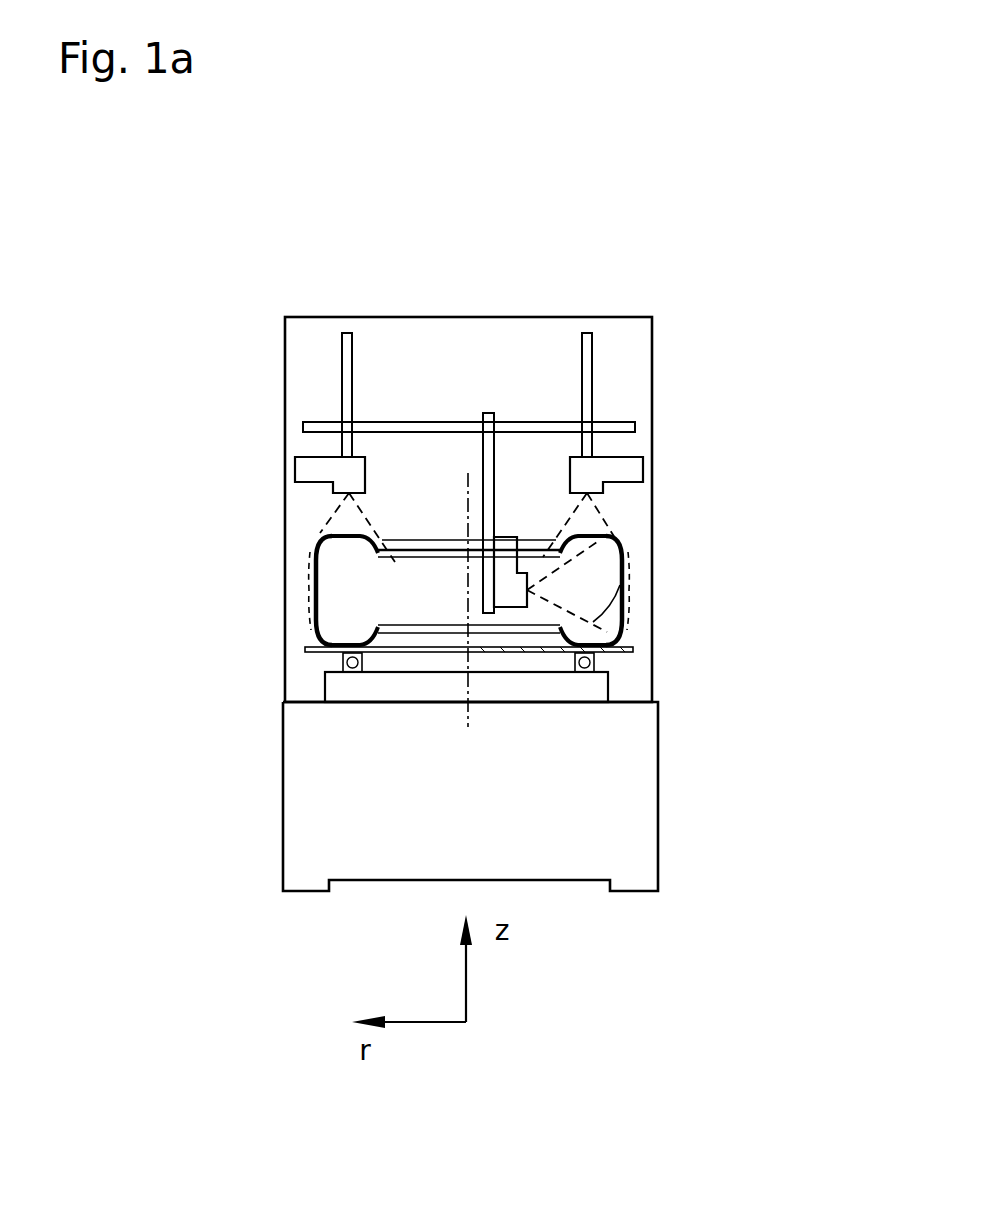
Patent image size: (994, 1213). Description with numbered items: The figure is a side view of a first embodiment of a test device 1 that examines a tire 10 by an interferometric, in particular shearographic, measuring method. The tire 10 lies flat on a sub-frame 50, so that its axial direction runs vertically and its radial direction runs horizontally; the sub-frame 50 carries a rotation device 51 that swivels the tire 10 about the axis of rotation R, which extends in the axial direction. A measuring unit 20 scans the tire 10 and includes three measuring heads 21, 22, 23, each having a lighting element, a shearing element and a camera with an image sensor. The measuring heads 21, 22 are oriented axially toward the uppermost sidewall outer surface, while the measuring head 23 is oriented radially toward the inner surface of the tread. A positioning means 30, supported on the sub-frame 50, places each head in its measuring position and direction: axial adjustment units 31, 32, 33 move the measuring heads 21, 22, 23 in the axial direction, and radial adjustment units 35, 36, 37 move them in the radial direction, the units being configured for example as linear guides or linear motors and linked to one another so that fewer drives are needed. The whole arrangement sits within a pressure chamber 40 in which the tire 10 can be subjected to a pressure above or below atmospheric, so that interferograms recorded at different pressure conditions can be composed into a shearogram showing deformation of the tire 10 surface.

The test device 1 is at (474, 433).
The tire 10 is at (510, 628).
The measuring unit 20 is at (470, 506).
The measuring head 21 is at (337, 472).
The measuring head 22 is at (598, 470).
The measuring head 23 is at (508, 580).
The positioning means 30 is at (418, 417).
The axial adjustment unit 31 is at (345, 333).
The axial adjustment unit 32 is at (587, 333).
The axial adjustment unit 33 is at (490, 490).
The radial adjustment unit 35 is at (324, 373).
The radial adjustment unit 36 is at (324, 373).
The radial adjustment unit 37 is at (323, 427).
The pressure chamber 40 is at (503, 358).
The sub-frame 50 is at (295, 815).
The rotation device 51 is at (345, 675).
The axis of rotation R is at (468, 728).